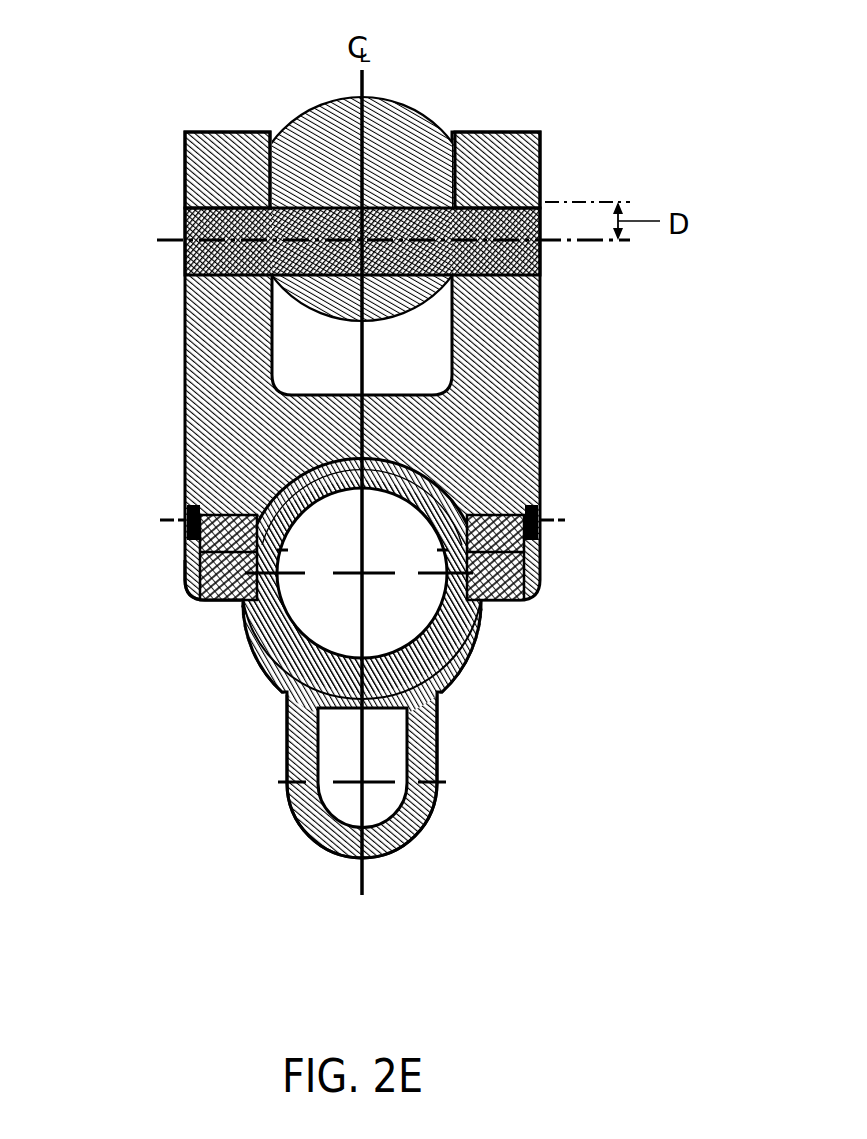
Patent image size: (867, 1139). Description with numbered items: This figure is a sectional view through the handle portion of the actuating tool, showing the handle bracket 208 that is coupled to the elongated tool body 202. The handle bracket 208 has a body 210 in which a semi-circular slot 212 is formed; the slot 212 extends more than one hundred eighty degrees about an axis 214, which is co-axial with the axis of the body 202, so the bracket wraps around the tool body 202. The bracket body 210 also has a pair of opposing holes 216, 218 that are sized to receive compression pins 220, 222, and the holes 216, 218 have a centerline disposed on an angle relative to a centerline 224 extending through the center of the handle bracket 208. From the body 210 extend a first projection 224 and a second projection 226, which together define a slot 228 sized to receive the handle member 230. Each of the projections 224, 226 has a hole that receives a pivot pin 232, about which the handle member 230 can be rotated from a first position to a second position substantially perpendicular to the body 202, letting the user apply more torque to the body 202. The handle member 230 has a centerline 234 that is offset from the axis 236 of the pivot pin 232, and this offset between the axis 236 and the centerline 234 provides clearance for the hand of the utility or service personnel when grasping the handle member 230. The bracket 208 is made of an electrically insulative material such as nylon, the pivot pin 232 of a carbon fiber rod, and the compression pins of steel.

The body 202 is at (462, 620).
The handle bracket 208 is at (195, 595).
The body 210 is at (185, 447).
The semi-circular slot 212 is at (447, 472).
The axis 214 is at (358, 575).
The hole 216 is at (210, 565).
The hole 218 is at (508, 562).
The compression pin 220 is at (185, 540).
The compression pin 222 is at (508, 557).
The first projection 224 is at (185, 160).
The second projection 226 is at (542, 163).
The slot 228 is at (300, 346).
The handle member 230 is at (418, 115).
The pivot pin 232 is at (185, 265).
The centerline 234 is at (360, 195).
The axis 236 is at (185, 235).